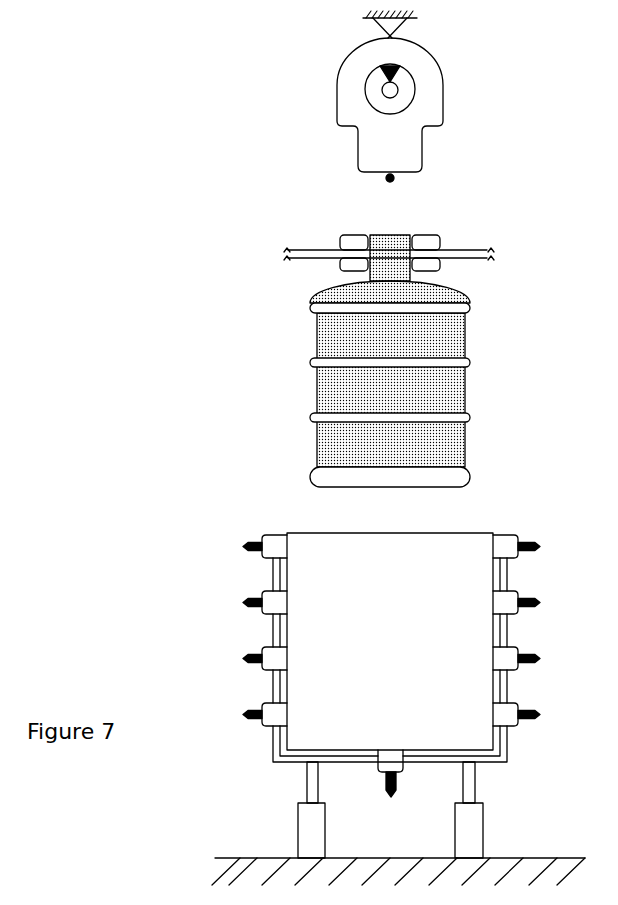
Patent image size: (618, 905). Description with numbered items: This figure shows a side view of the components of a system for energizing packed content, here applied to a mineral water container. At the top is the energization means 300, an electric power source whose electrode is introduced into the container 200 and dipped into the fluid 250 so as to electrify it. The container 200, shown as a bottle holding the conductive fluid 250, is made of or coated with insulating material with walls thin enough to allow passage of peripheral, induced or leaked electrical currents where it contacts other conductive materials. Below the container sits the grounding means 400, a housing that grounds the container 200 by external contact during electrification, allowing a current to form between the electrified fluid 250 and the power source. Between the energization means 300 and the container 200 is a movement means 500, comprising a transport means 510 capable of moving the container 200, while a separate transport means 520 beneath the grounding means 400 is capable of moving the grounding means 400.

The energization means 300 is at (338, 83).
The movement means 500 is at (295, 250).
The transport means 510 is at (430, 242).
The container 200 is at (445, 332).
The fluid 250 is at (391, 390).
The grounding means 400 is at (338, 580).
The transport means 520 is at (298, 833).